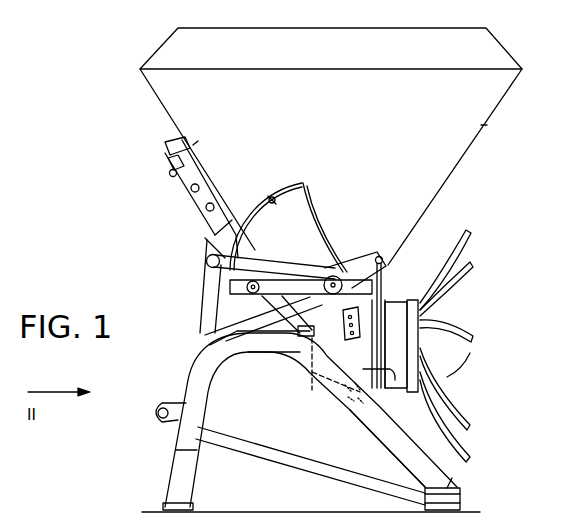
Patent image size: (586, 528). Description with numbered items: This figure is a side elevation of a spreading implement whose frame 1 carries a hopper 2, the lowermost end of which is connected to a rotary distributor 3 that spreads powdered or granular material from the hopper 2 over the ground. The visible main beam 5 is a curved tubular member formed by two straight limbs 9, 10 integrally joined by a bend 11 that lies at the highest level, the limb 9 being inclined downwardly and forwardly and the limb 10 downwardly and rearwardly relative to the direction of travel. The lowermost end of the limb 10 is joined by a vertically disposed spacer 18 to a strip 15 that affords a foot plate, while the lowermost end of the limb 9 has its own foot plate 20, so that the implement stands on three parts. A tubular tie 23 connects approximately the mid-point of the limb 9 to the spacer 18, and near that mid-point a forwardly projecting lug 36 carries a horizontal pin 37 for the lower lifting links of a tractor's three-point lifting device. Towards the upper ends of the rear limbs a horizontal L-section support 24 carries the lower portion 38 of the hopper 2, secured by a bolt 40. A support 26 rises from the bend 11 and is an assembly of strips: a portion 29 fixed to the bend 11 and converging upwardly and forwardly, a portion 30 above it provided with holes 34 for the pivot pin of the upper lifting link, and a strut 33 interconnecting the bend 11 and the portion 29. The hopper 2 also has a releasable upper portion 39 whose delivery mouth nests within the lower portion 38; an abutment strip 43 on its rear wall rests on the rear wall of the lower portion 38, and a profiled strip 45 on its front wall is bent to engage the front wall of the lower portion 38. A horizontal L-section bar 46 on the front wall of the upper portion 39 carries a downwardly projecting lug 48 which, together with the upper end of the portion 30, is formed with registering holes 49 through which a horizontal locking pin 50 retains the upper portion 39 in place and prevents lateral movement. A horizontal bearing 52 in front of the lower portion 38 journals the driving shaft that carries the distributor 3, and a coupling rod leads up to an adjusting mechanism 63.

The frame 1 is at (191, 378).
The hopper 2 is at (458, 173).
The rotary distributor 3 is at (462, 289).
The main beam 5 is at (378, 441).
The straight limb 9 is at (193, 481).
The straight limb 10 is at (452, 478).
The bend 11 is at (252, 350).
The strip 15 is at (470, 507).
The spacer 18 is at (458, 498).
The foot plate 20 is at (165, 507).
The tubular tie 23 is at (310, 466).
The support 24 is at (336, 389).
The support 26 is at (204, 248).
The portion 29 is at (256, 240).
The portion 30 is at (198, 208).
The strut 33 is at (201, 298).
The holes 34 is at (205, 208).
The lug 36 is at (162, 406).
The pin 37 is at (160, 420).
The lower portion 38 is at (380, 357).
The upper portion 39 is at (485, 126).
The bolt 40 is at (352, 402).
The abutment strip 43 is at (398, 262).
The profiled strip 45 is at (270, 262).
The bar 46 is at (168, 140).
The lug 48 is at (168, 161).
The holes 49 is at (195, 144).
The locking pin 50 is at (169, 174).
The bearing 52 is at (283, 353).
The adjusting mechanism 63 is at (322, 206).